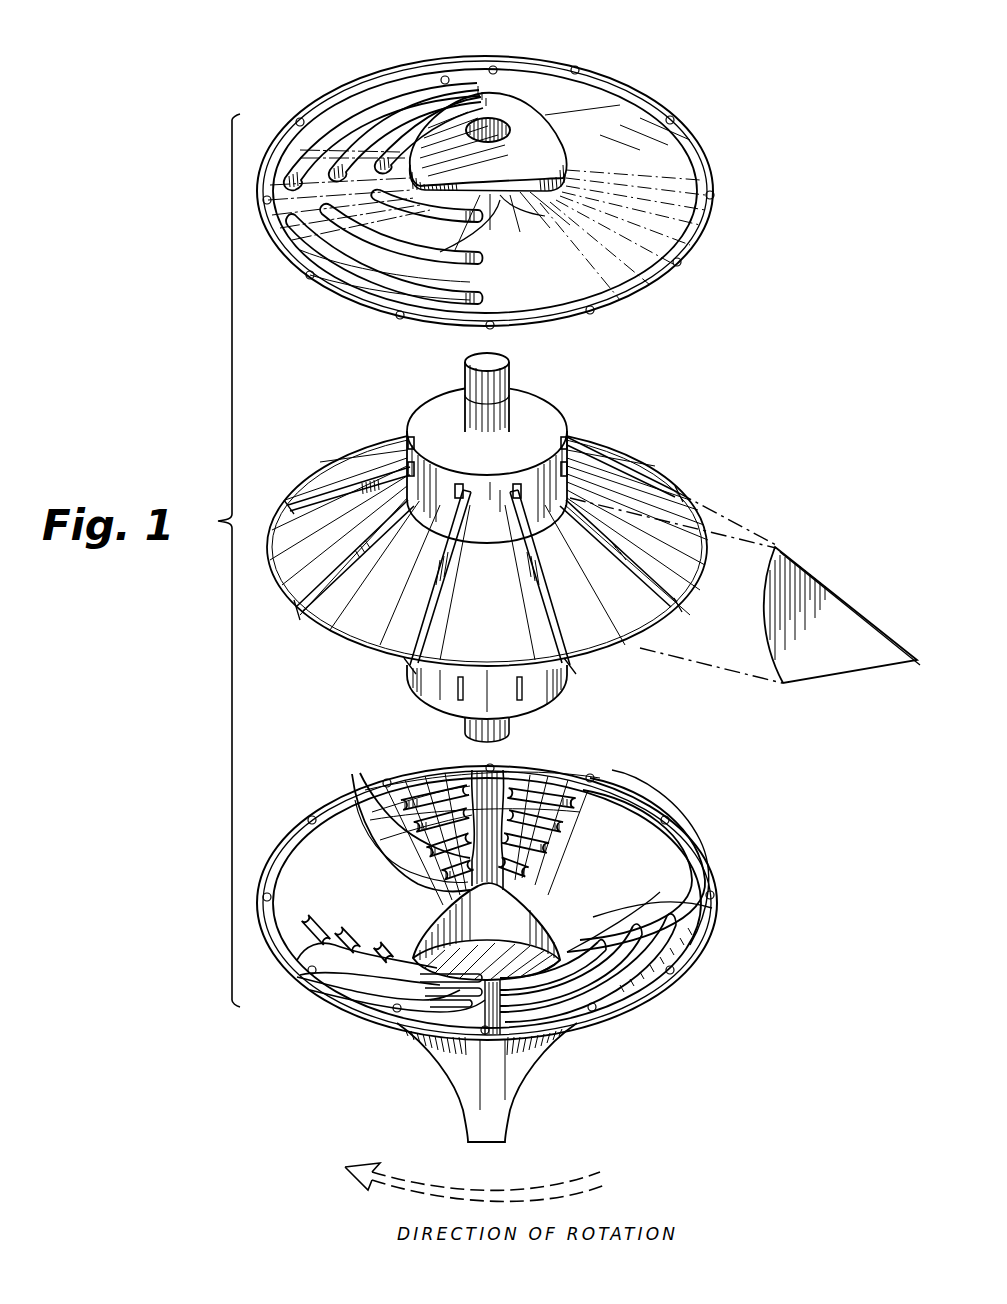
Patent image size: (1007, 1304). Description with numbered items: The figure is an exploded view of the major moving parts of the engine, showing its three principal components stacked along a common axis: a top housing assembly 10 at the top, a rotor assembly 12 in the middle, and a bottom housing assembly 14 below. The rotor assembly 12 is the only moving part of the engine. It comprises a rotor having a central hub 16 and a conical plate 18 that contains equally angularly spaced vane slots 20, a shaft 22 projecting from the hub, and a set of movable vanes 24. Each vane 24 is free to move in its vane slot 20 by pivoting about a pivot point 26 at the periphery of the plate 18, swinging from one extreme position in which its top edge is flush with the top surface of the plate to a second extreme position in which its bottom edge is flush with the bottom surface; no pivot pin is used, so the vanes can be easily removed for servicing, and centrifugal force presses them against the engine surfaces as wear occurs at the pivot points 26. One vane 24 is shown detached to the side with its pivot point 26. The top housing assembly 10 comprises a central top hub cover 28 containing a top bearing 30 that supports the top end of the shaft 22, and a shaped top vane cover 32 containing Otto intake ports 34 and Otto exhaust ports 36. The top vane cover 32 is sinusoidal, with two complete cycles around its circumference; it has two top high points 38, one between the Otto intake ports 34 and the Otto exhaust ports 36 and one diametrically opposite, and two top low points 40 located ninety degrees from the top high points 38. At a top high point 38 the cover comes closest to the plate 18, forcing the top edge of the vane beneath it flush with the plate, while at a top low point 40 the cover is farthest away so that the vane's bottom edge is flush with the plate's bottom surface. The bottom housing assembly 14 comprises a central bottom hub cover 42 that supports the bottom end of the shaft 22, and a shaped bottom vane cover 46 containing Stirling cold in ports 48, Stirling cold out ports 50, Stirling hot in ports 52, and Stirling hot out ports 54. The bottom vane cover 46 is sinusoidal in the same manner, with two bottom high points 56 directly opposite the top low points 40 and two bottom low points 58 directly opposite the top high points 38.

The top housing assembly 10 is at (683, 118).
The rotor assembly 12 is at (586, 440).
The bottom housing assembly 14 is at (513, 953).
The hub 16 is at (558, 404).
The plate 18 is at (355, 625).
The vane slots 20 is at (400, 480).
The shaft 22 is at (512, 420).
The movable vanes 24 is at (346, 480).
The pivot point 26 is at (290, 506).
The central top hub cover 28 is at (477, 86).
The top bearing 30 is at (508, 126).
The top vane cover 32 is at (680, 174).
The Otto intake ports 34 is at (492, 228).
The Otto exhaust ports 36 is at (388, 162).
The top high points 38 is at (322, 256).
The top low points 40 is at (503, 82).
The central bottom hub cover 42 is at (383, 1000).
The bottom vane cover 46 is at (673, 856).
The Stirling cold in ports 48 is at (300, 975).
The Stirling cold out ports 50 is at (358, 778).
The Stirling hot in ports 52 is at (525, 918).
The Stirling hot out ports 54 is at (712, 906).
The bottom high points 56 is at (494, 792).
The bottom low points 58 is at (662, 892).